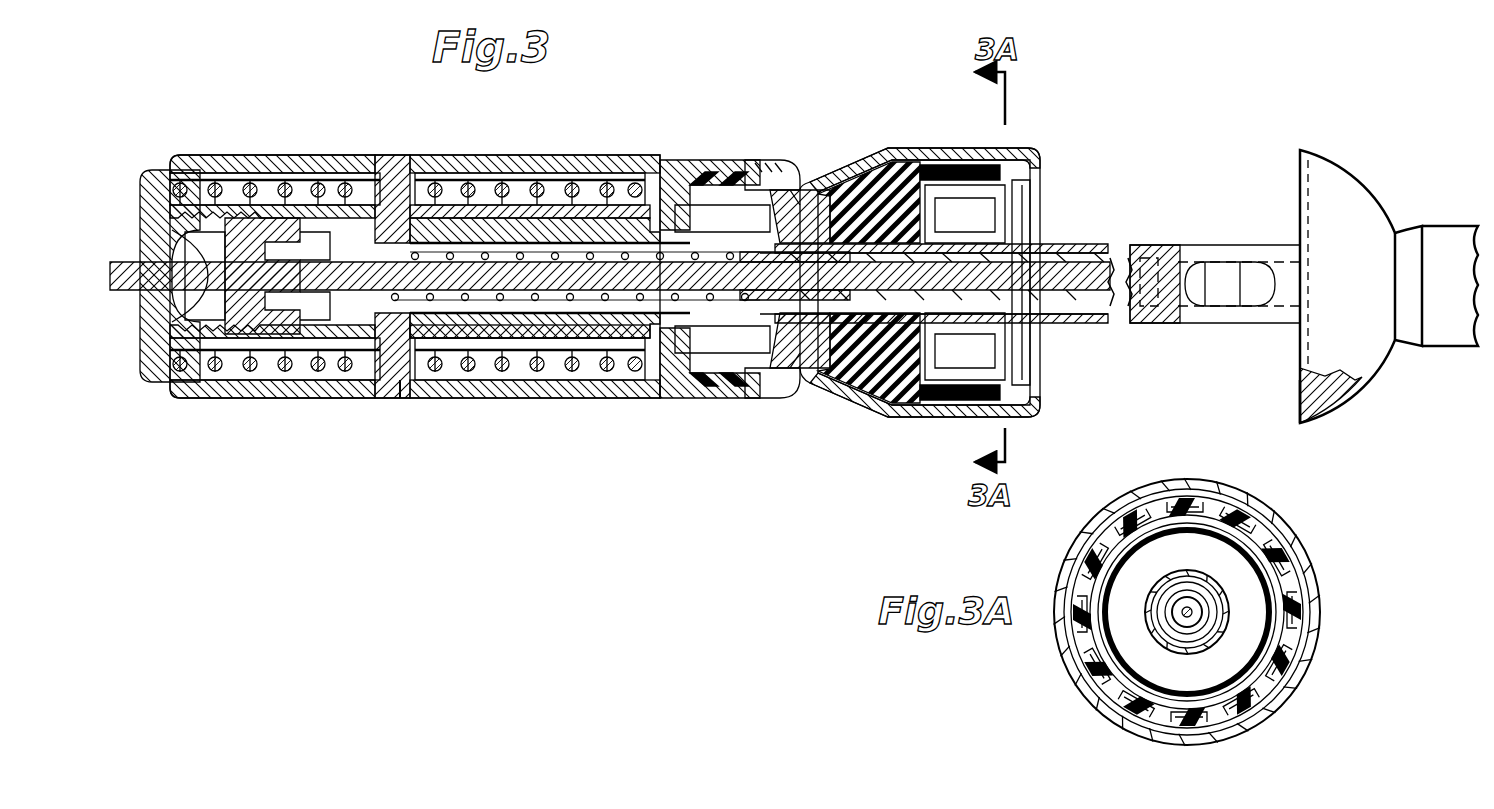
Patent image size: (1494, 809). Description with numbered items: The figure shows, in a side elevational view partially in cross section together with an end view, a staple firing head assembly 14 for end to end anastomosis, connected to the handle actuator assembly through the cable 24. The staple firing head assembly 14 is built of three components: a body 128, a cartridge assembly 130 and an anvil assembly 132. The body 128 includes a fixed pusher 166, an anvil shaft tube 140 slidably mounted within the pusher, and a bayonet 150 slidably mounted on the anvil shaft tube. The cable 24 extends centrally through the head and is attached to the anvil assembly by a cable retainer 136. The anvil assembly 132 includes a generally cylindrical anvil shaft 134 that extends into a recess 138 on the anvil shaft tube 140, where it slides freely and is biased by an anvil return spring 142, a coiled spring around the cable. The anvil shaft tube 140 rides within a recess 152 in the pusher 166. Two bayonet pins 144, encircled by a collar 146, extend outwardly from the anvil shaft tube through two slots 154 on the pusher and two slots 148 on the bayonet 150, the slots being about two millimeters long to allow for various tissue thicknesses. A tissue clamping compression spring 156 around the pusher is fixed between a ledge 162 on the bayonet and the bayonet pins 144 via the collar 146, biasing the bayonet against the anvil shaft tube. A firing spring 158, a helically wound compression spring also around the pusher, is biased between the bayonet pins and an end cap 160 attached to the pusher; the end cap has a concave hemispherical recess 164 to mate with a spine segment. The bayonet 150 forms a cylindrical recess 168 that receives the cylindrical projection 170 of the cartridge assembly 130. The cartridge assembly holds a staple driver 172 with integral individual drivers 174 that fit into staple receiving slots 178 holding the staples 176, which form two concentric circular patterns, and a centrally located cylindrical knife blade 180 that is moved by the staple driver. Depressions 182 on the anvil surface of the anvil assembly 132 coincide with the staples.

In FIG. 3, the staple firing head assembly 14 is at (680, 142).
In FIG. 3, the cable 24 is at (120, 260).
In FIG. 3, the body 128 is at (562, 160).
In FIG. 3, the cartridge assembly 130 is at (892, 150).
In FIG. 3A, the cartridge assembly 130 is at (1066, 572).
In FIG. 3, the anvil assembly 132 is at (1356, 392).
In FIG. 3, the anvil shaft 134 is at (1152, 246).
In FIG. 3, the cable retainer 136 is at (1228, 300).
In FIG. 3, the recess 138 is at (586, 318).
In FIG. 3, the anvil shaft tube 140 is at (336, 386).
In FIG. 3, the anvil return spring 142 is at (1104, 258).
In FIG. 3, the bayonet pins 144 is at (388, 158).
In FIG. 3, the collar 146 is at (406, 402).
In FIG. 3, the slots 148 is at (416, 162).
In FIG. 3, the bayonet 150 is at (682, 398).
In FIG. 3, the recess 152 is at (232, 386).
In FIG. 3, the slots 154 is at (304, 176).
In FIG. 3, the tissue clamping compression spring 156 is at (640, 172).
In FIG. 3, the firing spring 158 is at (238, 162).
In FIG. 3, the end cap 160 is at (162, 386).
In FIG. 3, the ledge 162 is at (630, 396).
In FIG. 3, the recess 164 is at (140, 318).
In FIG. 3, the pusher 166 is at (520, 332).
In FIG. 3, the recess 168 is at (728, 352).
In FIG. 3, the cylindrical projection 170 is at (800, 185).
In FIG. 3, the staple driver 172 is at (862, 384).
In FIG. 3, the individual drivers 174 is at (976, 138).
In FIG. 3A, the individual drivers 174 is at (1072, 645).
In FIG. 3, the staples 176 is at (1012, 160).
In FIG. 3, the staple receiving slots 178 is at (1040, 182).
In FIG. 3A, the staple receiving slots 178 is at (1306, 638).
In FIG. 3, the knife blade 180 is at (964, 384).
In FIG. 3, the depressions 182 is at (1300, 395).